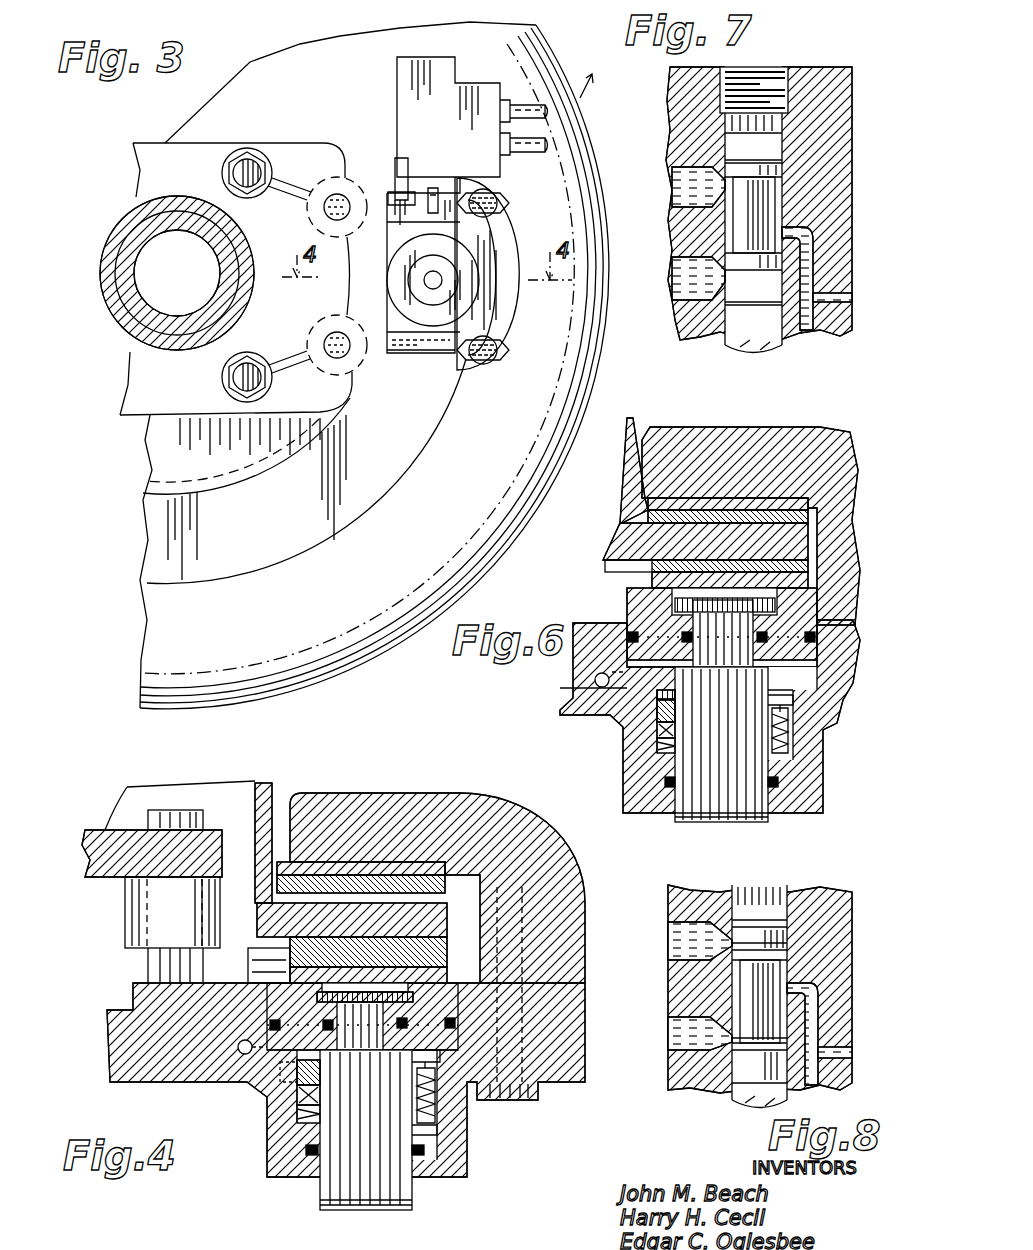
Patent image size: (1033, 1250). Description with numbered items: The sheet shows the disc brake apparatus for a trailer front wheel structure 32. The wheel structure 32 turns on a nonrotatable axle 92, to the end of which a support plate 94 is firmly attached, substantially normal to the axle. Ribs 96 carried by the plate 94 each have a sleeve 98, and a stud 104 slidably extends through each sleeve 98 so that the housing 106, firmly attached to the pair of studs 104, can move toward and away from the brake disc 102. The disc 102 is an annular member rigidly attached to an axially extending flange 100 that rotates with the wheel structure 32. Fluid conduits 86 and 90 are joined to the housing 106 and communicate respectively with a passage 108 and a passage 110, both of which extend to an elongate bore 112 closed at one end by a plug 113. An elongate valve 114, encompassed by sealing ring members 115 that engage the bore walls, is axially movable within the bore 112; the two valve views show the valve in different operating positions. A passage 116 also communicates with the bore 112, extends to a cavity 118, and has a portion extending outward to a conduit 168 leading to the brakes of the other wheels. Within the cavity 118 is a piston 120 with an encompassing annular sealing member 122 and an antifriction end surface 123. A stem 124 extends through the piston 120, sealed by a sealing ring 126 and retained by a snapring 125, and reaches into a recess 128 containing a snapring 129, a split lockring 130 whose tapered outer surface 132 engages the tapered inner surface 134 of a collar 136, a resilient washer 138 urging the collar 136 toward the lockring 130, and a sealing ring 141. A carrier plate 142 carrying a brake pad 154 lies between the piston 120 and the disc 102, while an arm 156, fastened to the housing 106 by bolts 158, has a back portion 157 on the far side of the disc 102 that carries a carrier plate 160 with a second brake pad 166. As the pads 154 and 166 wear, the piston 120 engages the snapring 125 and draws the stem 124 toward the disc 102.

In FIG. 3, the front wheel structure 32 is at (332, 589).
In FIG. 3, the fluid conduit 86 is at (530, 146).
In FIG. 3, the fluid conduit 90 is at (516, 104).
In FIG. 3, the nonrotatable axle 92 is at (122, 250).
In FIG. 3, the support plate 94 is at (168, 160).
In FIG. 4, the support plate 94 is at (107, 832).
In FIG. 3, the rib 96 is at (273, 166).
In FIG. 4, the rib 96 is at (125, 892).
In FIG. 3, the sleeve 98 is at (302, 209).
In FIG. 4, the sleeve 98 is at (133, 935).
In FIG. 3, the axially extending flange 100 is at (240, 484).
In FIG. 6, the axially extending flange 100 is at (623, 479).
In FIG. 4, the axially extending flange 100 is at (260, 783).
In FIG. 3, the brake disc 102 is at (416, 470).
In FIG. 6, the brake disc 102 is at (614, 541).
In FIG. 4, the brake disc 102 is at (447, 903).
In FIG. 3, the stud 104 is at (330, 212).
In FIG. 4, the stud 104 is at (172, 810).
In FIG. 3, the housing 106 is at (425, 52).
In FIG. 7, the housing 106 is at (832, 118).
In FIG. 8, the housing 106 is at (828, 888).
In FIG. 6, the housing 106 is at (615, 809).
In FIG. 4, the housing 106 is at (172, 1093).
In FIG. 7, the passage 108 is at (690, 290).
In FIG. 8, the passage 108 is at (672, 1042).
In FIG. 7, the passage 110 is at (690, 186).
In FIG. 8, the passage 110 is at (672, 941).
In FIG. 7, the elongate bore 112 is at (790, 205).
In FIG. 8, the elongate bore 112 is at (770, 898).
In FIG. 7, the plug 113 is at (770, 72).
In FIG. 7, the elongate valve 114 is at (770, 352).
In FIG. 8, the elongate valve 114 is at (762, 997).
In FIG. 7, the sealing ring member 115 is at (736, 162).
In FIG. 8, the sealing ring member 115 is at (790, 927).
In FIG. 7, the passage 116 is at (812, 256).
In FIG. 8, the passage 116 is at (820, 1000).
In FIG. 6, the passage 116 is at (595, 681).
In FIG. 4, the passage 116 is at (238, 1047).
In FIG. 6, the cavity 118 is at (800, 678).
In FIG. 4, the cavity 118 is at (495, 1051).
In FIG. 6, the piston 120 is at (805, 609).
In FIG. 4, the piston 120 is at (272, 1000).
In FIG. 6, the annular sealing member 122 is at (815, 640).
In FIG. 4, the annular sealing member 122 is at (457, 1027).
In FIG. 6, the end surface 123 is at (655, 580).
In FIG. 4, the end surface 123 is at (368, 975).
In FIG. 3, the stem 124 is at (433, 290).
In FIG. 6, the stem 124 is at (721, 744).
In FIG. 4, the stem 124 is at (330, 1195).
In FIG. 6, the snapring 125 is at (717, 612).
In FIG. 4, the snapring 125 is at (365, 1021).
In FIG. 6, the sealing ring 126 is at (685, 632).
In FIG. 4, the sealing ring 126 is at (410, 1033).
In FIG. 6, the recess 128 is at (775, 700).
In FIG. 4, the recess 128 is at (430, 1062).
In FIG. 6, the snapring 129 is at (652, 700).
In FIG. 4, the snapring 129 is at (290, 1072).
In FIG. 4, the split lockring 130 is at (438, 1088).
In FIG. 6, the tapered outer surface 132 is at (827, 703).
In FIG. 4, the tapered outer surface 132 is at (440, 1105).
In FIG. 6, the tapered inner surface 134 is at (673, 740).
In FIG. 4, the tapered inner surface 134 is at (312, 1108).
In FIG. 6, the collar 136 is at (660, 735).
In FIG. 4, the collar 136 is at (300, 1108).
In FIG. 6, the resilient washer 138 is at (787, 753).
In FIG. 4, the resilient washer 138 is at (300, 1140).
In FIG. 6, the sealing ring 141 is at (667, 808).
In FIG. 4, the sealing ring 141 is at (417, 1149).
In FIG. 6, the carrier plate 142 is at (810, 588).
In FIG. 4, the carrier plate 142 is at (287, 975).
In FIG. 6, the brake pad 154 is at (650, 566).
In FIG. 4, the brake pad 154 is at (447, 960).
In FIG. 6, the arm 156 is at (830, 429).
In FIG. 4, the arm 156 is at (477, 791).
In FIG. 6, the back portion 157 is at (663, 442).
In FIG. 4, the back portion 157 is at (355, 793).
In FIG. 3, the bolt 158 is at (497, 205).
In FIG. 4, the bolt 158 is at (540, 1098).
In FIG. 6, the carrier plate 160 is at (745, 503).
In FIG. 4, the carrier plate 160 is at (292, 868).
In FIG. 6, the brake pad 166 is at (670, 515).
In FIG. 4, the brake pad 166 is at (368, 890).
In FIG. 7, the conduit 168 is at (838, 300).
In FIG. 8, the conduit 168 is at (848, 1053).